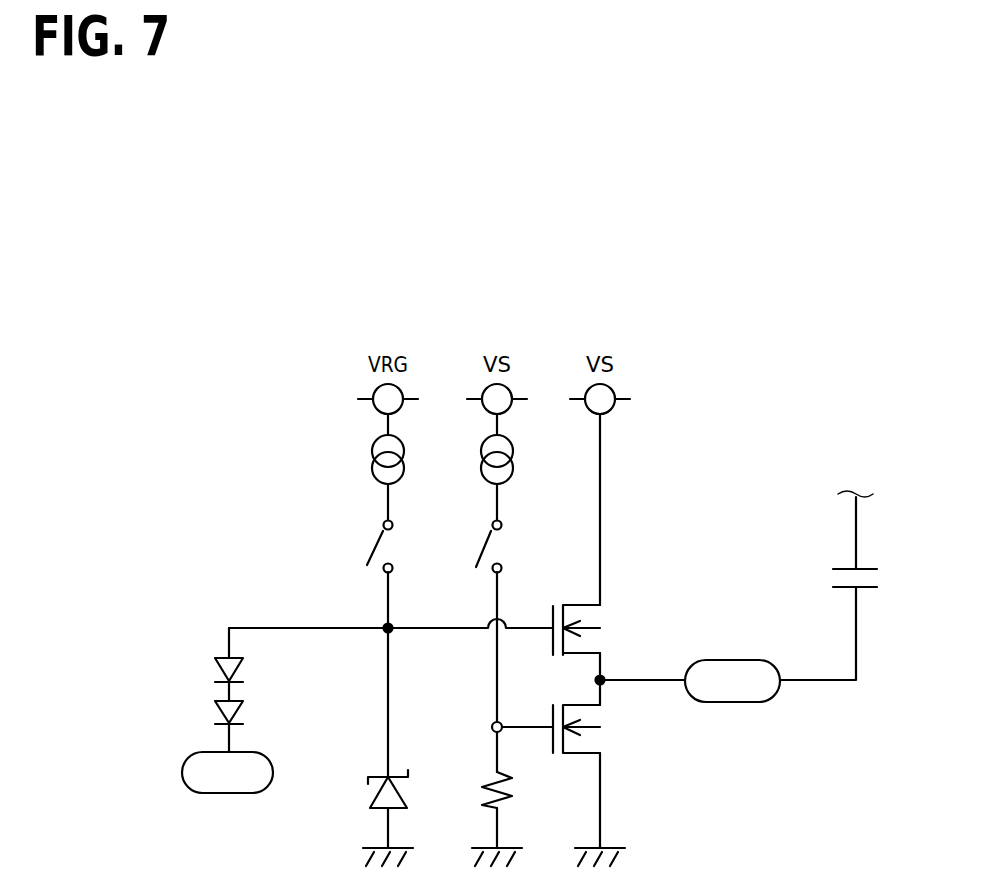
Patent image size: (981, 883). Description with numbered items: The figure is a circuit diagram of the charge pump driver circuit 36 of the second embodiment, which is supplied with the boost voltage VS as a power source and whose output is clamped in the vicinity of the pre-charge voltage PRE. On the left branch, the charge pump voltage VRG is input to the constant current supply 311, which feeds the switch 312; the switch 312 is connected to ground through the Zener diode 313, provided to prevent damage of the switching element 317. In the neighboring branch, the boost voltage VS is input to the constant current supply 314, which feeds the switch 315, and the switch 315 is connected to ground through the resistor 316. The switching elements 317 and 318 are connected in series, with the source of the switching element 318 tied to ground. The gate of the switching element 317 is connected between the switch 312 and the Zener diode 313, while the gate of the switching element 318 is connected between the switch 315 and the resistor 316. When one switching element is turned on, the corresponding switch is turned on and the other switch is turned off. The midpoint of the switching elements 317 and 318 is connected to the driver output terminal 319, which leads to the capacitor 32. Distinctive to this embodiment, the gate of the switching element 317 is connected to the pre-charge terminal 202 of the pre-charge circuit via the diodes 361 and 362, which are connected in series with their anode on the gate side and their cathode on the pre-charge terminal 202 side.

The constant current supply 311 is at (373, 444).
The switch 312 is at (373, 549).
The Zener diode 313 is at (372, 793).
The constant current supply 314 is at (483, 437).
The switch 315 is at (487, 540).
The resistor 316 is at (492, 773).
The switching element 317 is at (573, 603).
The switching element 318 is at (571, 756).
The driver output terminal 319 is at (720, 660).
The diode 361 is at (215, 670).
The diode 362 is at (215, 712).
The pre-charge terminal 202 is at (181, 773).
The capacitor 32 is at (870, 570).
The charge pump driver circuit 36 is at (680, 819).